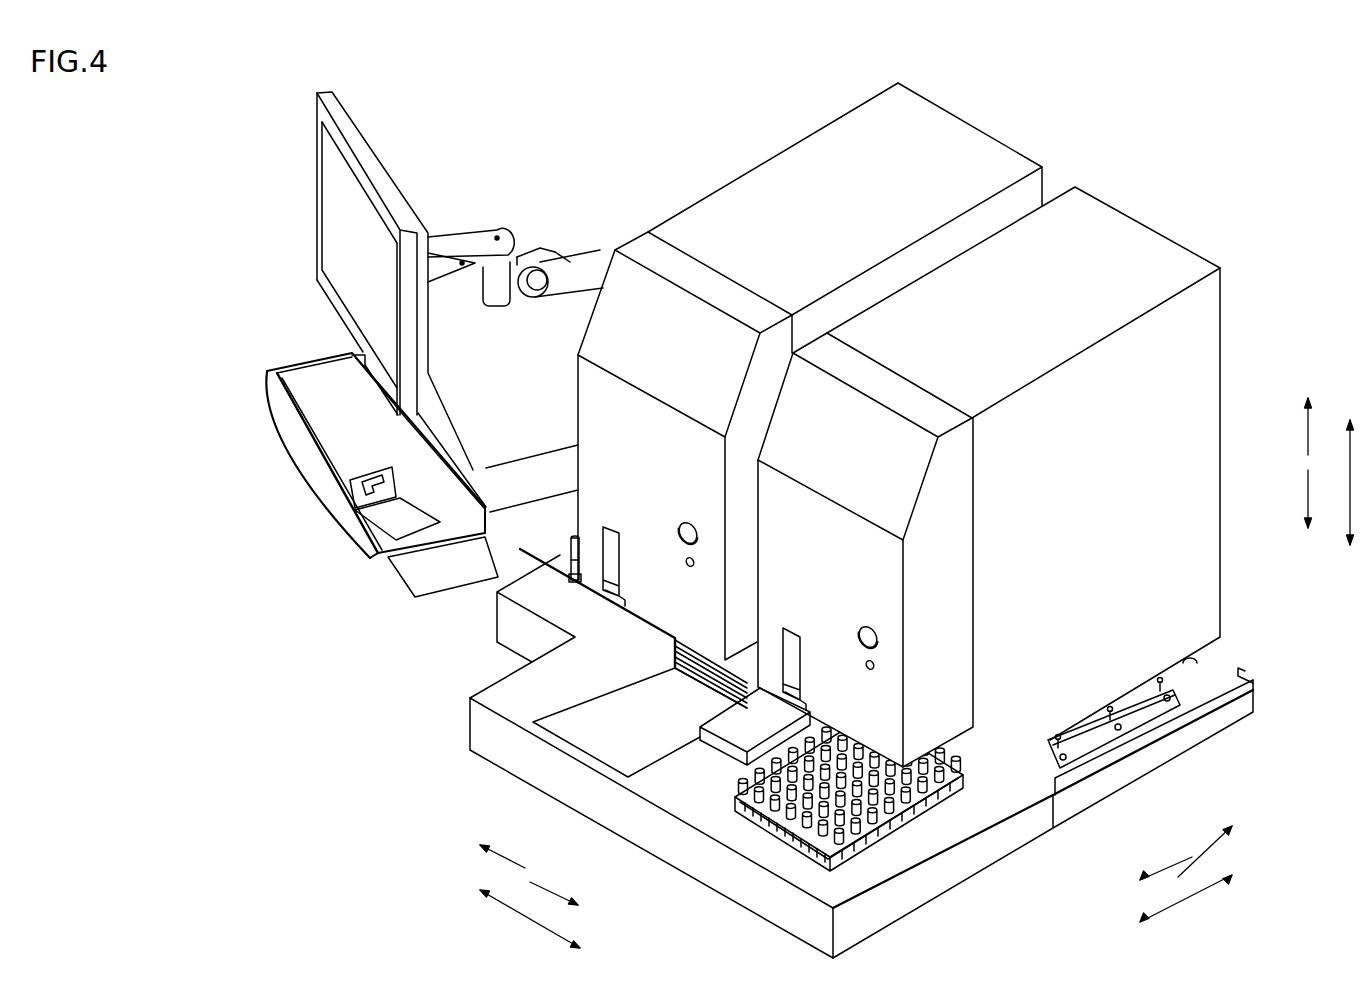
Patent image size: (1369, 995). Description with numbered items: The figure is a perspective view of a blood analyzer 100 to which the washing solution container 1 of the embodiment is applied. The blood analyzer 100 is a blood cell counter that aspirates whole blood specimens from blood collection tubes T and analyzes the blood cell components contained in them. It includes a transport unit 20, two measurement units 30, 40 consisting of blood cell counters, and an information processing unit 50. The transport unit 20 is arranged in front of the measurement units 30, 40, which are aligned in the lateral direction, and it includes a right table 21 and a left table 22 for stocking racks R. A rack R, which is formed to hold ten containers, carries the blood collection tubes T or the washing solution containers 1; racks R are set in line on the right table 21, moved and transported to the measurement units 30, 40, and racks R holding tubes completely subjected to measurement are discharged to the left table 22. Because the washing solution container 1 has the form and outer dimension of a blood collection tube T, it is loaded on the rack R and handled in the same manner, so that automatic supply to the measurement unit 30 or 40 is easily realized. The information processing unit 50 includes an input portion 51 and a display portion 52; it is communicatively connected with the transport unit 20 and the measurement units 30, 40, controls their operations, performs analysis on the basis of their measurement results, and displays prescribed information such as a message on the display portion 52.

The blood analyzer 100 is at (1160, 100).
The measurement unit 30 is at (1002, 110).
The measurement unit 40 is at (1180, 200).
The information processing unit 50 is at (303, 136).
The input portion 51 is at (303, 365).
The display portion 52 is at (337, 229).
The transport unit 20 is at (888, 898).
The right table 21 is at (963, 780).
The left table 22 is at (583, 733).
The washing solution container 1 is at (733, 805).
The blood collection tube T is at (797, 833).
The rack R is at (905, 820).